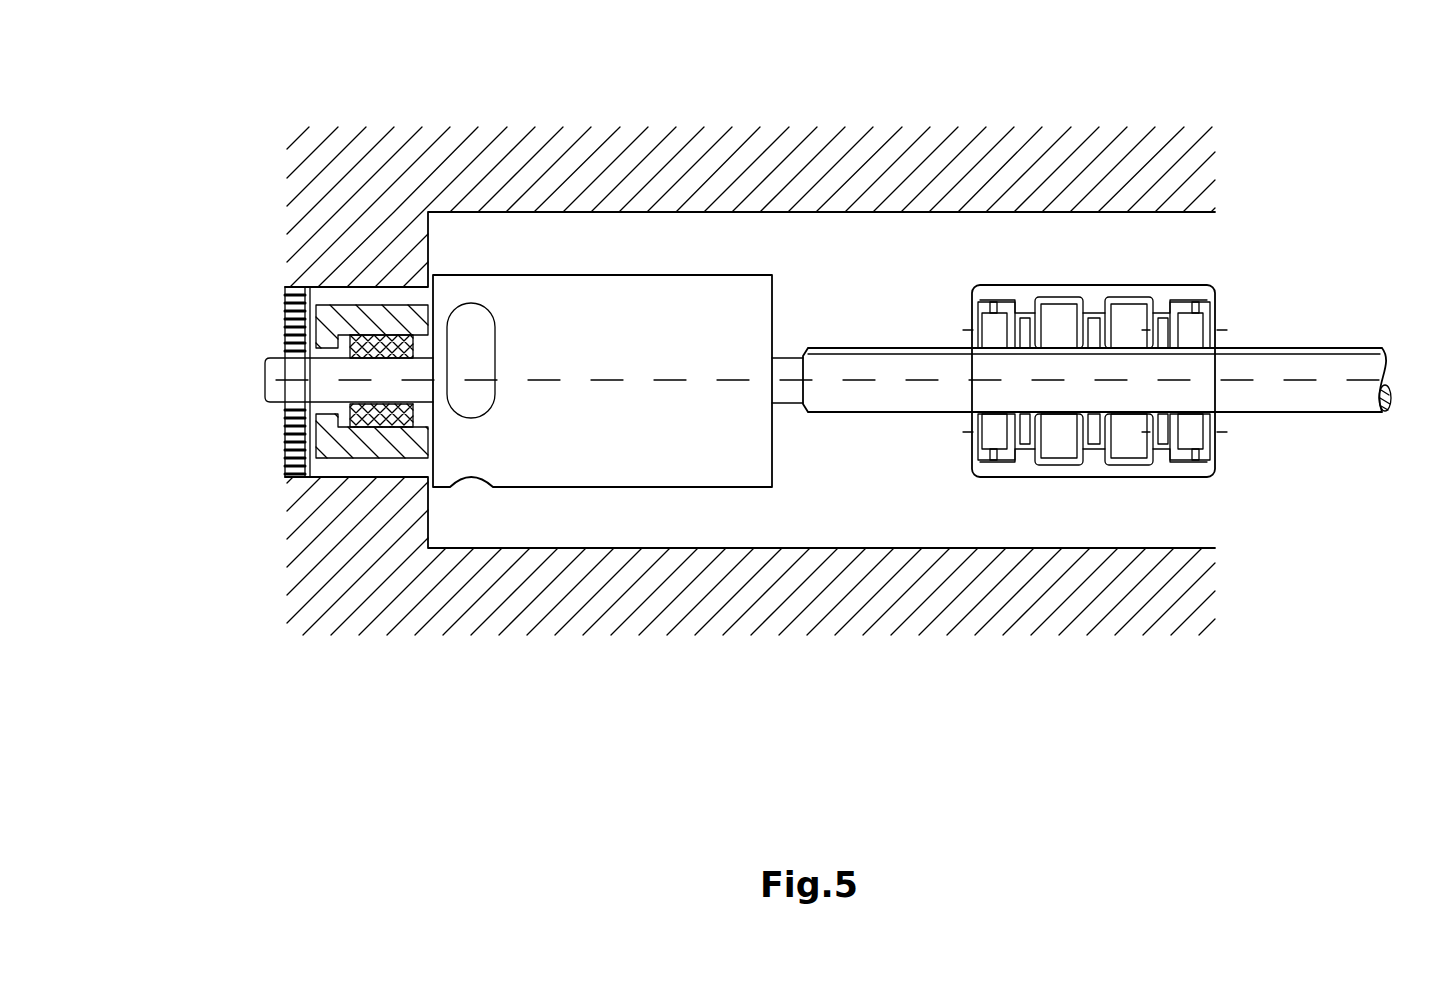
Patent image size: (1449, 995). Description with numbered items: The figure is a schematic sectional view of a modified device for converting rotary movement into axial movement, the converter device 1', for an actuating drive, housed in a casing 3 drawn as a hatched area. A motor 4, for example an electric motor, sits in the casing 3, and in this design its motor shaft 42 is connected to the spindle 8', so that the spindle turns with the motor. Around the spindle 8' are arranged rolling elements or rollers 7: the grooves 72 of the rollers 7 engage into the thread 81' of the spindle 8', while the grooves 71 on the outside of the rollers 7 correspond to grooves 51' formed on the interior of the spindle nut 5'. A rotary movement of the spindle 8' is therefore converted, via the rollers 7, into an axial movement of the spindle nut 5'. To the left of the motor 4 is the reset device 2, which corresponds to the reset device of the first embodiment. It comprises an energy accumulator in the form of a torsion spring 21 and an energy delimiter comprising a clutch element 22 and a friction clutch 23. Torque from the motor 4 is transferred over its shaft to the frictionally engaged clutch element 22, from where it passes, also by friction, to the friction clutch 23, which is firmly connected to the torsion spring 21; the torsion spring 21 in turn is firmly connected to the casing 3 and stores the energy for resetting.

The converter device 1' is at (1403, 499).
The reset device 2 is at (298, 381).
The casing 3 is at (418, 146).
The motor 4 is at (563, 473).
The spindle nut 5' is at (1133, 351).
The rolling elements or rollers 7 is at (1131, 414).
The spindle 8' is at (1123, 352).
The torsion spring 21 is at (285, 295).
The clutch element 22 is at (363, 347).
The friction clutch 23 is at (332, 442).
The motor shaft 42 is at (785, 373).
The grooves of the spindle nut 51' is at (1093, 347).
The grooves on the outside of the rollers 71 is at (1163, 458).
The grooves of the rollers 72 is at (1063, 460).
The thread of the spindle 81' is at (1095, 416).